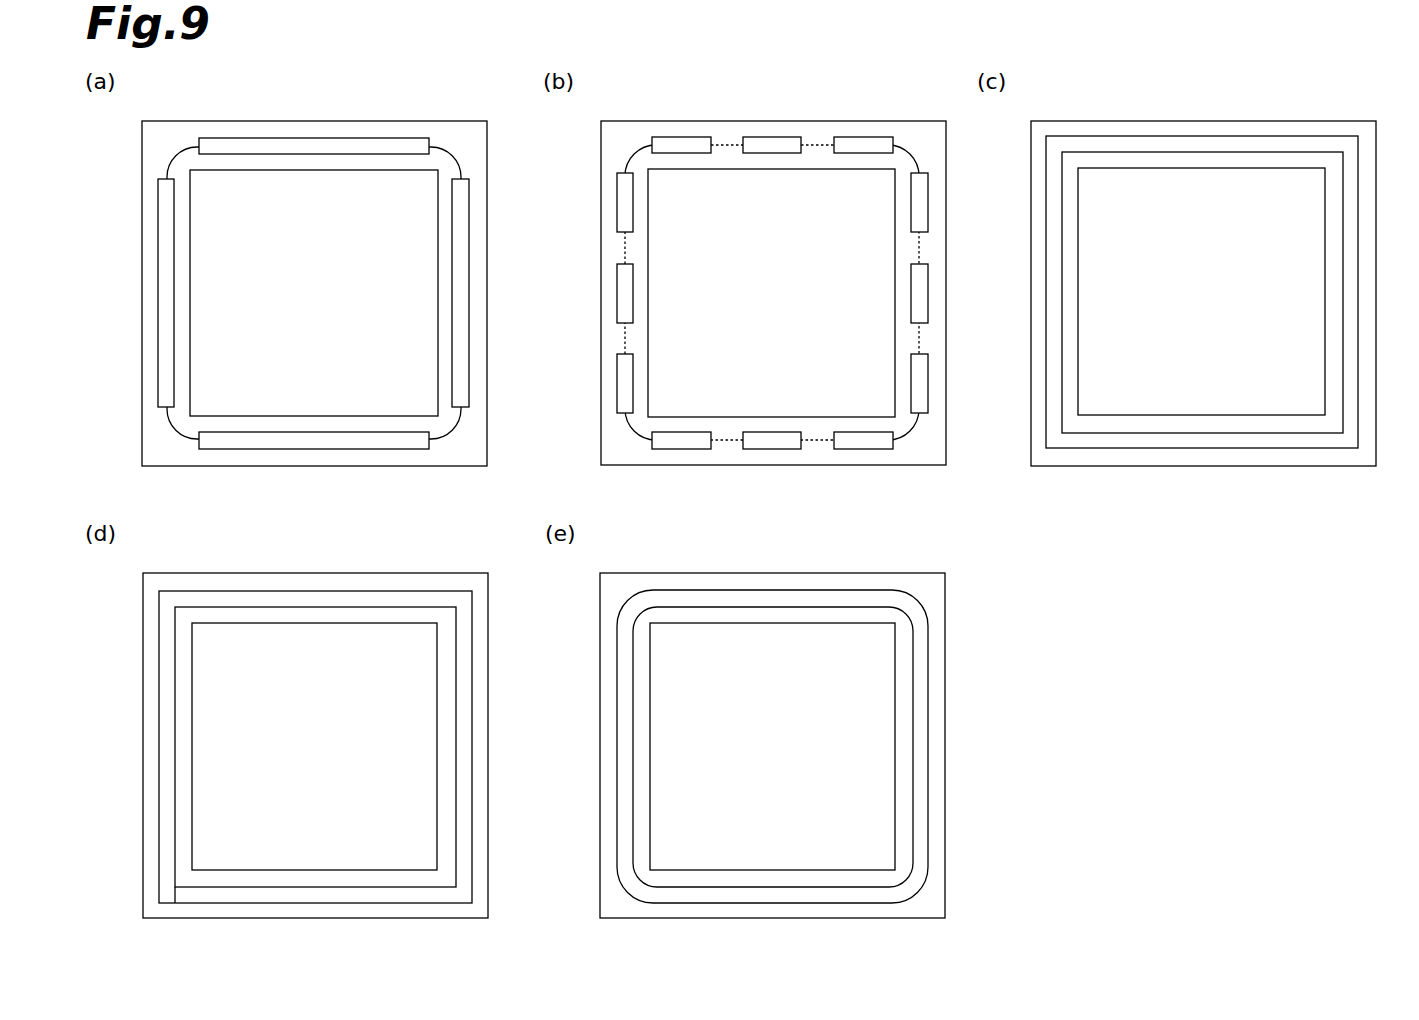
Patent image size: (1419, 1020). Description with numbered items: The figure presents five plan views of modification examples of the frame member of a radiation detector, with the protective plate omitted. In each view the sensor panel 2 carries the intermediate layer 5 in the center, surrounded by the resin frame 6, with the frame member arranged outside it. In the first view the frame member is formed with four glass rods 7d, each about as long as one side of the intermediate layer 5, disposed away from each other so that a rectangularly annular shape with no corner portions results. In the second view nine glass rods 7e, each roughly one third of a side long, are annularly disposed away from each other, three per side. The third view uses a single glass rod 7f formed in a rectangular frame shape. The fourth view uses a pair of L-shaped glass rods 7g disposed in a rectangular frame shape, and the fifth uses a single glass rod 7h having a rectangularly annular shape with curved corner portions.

The sensor panel 2 is at (452, 121).
The intermediate layer 5 is at (313, 185).
The resin frame 6 is at (384, 163).
The glass rods 7d is at (240, 144).
The glass rods 7e is at (683, 144).
The glass rod 7f is at (1348, 278).
The glass rods 7g is at (165, 700).
The glass rod 7h is at (917, 732).